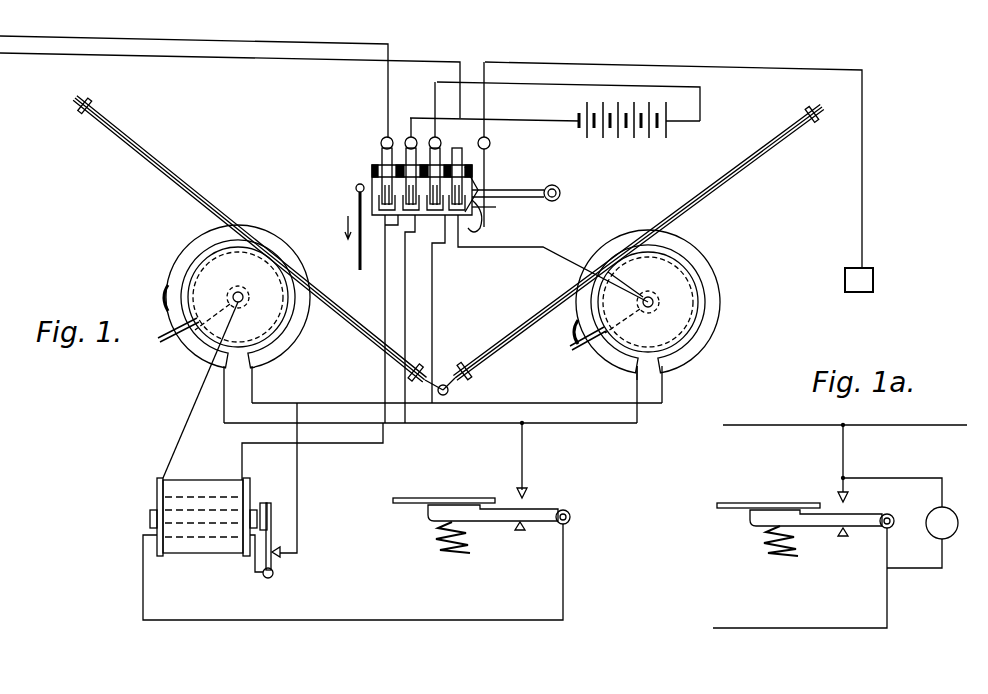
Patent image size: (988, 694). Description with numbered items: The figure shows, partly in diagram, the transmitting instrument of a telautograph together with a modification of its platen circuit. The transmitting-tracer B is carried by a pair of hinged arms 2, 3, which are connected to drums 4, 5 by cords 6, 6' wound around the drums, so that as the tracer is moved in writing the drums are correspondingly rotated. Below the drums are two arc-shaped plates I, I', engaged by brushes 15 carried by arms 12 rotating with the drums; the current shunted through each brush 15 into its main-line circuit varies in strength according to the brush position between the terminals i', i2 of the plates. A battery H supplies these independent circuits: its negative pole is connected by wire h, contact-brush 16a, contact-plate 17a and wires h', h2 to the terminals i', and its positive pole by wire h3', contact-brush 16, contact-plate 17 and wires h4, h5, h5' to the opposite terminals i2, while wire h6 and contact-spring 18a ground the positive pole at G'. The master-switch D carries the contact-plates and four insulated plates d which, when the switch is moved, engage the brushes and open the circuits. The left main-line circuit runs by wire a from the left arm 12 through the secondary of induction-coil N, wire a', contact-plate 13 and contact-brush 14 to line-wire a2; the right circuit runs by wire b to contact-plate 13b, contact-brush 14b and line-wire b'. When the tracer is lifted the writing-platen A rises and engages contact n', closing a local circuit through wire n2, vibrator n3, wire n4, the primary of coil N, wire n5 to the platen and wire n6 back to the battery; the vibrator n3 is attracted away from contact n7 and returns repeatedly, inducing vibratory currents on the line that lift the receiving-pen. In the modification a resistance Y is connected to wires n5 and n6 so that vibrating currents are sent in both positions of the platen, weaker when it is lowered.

In FIG. 1, the wire a2 is at (194, 79).
In FIG. 1, the wire b' is at (230, 85).
In FIG. 1, the wire h6 is at (862, 210).
In FIG. 1, the ground G' is at (871, 281).
In FIG. 1, the wire h3' is at (568, 101).
In FIG. 1, the wire h is at (495, 112).
In FIG. 1, the battery H is at (639, 133).
In FIG. 1, the contact-brush 14 is at (381, 150).
In FIG. 1, the contact-brush 16a is at (412, 137).
In FIG. 1, the contact-brush 16 is at (437, 148).
In FIG. 1, the contact-brush 14b is at (462, 158).
In FIG. 1, the insulated plates d is at (372, 172).
In FIG. 1, the master-switch D is at (516, 185).
In FIG. 1, the contact-spring 18a is at (499, 216).
In FIG. 1, the contact-plate 13 is at (362, 227).
In FIG. 1, the contact-plate 17a is at (400, 319).
In FIG. 1, the contact-plate 17 is at (432, 232).
In FIG. 1, the contact-plate 13b is at (487, 224).
In FIG. 1, the wire b is at (553, 258).
In FIG. 1, the wire h4 is at (405, 320).
In FIG. 1, the wire h' is at (443, 326).
In FIG. 1, the wire h2 is at (457, 392).
In FIG. 1, the wire h5' is at (430, 428).
In FIG. 1, the wire h5 is at (606, 405).
In FIG. 1A, the wire h5 is at (845, 440).
In FIG. 1, the arc-shaped plate I is at (231, 296).
In FIG. 1, the drum 4 is at (238, 297).
In FIG. 1, the brush 15 is at (166, 304).
In FIG. 1, the arm 12 is at (382, 343).
In FIG. 1, the terminal i2 is at (212, 366).
In FIG. 1, the terminal i' is at (468, 384).
In FIG. 1, the arc-shaped plate I' is at (658, 301).
In FIG. 1, the drum 5 is at (648, 302).
In FIG. 1, the hinged arm 2 is at (352, 326).
In FIG. 1, the cord 6' is at (144, 160).
In FIG. 1, the hinged arm 3 is at (512, 322).
In FIG. 1, the cord 6 is at (753, 167).
In FIG. 1, the transmitting-tracer B is at (446, 384).
In FIG. 1, the wire a is at (200, 390).
In FIG. 1, the wire a' is at (312, 451).
In FIG. 1, the induction-coil N is at (203, 509).
In FIG. 1, the wire n5 is at (353, 573).
In FIG. 1A, the wire n5 is at (800, 578).
In FIG. 1, the wire n4 is at (260, 566).
In FIG. 1, the vibrator n3 is at (270, 506).
In FIG. 1, the contact n7 is at (280, 558).
In FIG. 1, the wire n2 is at (298, 490).
In FIG. 1, the wire n6 is at (530, 460).
In FIG. 1A, the wire n6 is at (853, 463).
In FIG. 1, the contact n' is at (531, 508).
In FIG. 1A, the contact n' is at (855, 509).
In FIG. 1, the writing-platen A is at (481, 516).
In FIG. 1A, the writing-platen A is at (805, 519).
In FIG. 1A, the resistance Y is at (909, 523).